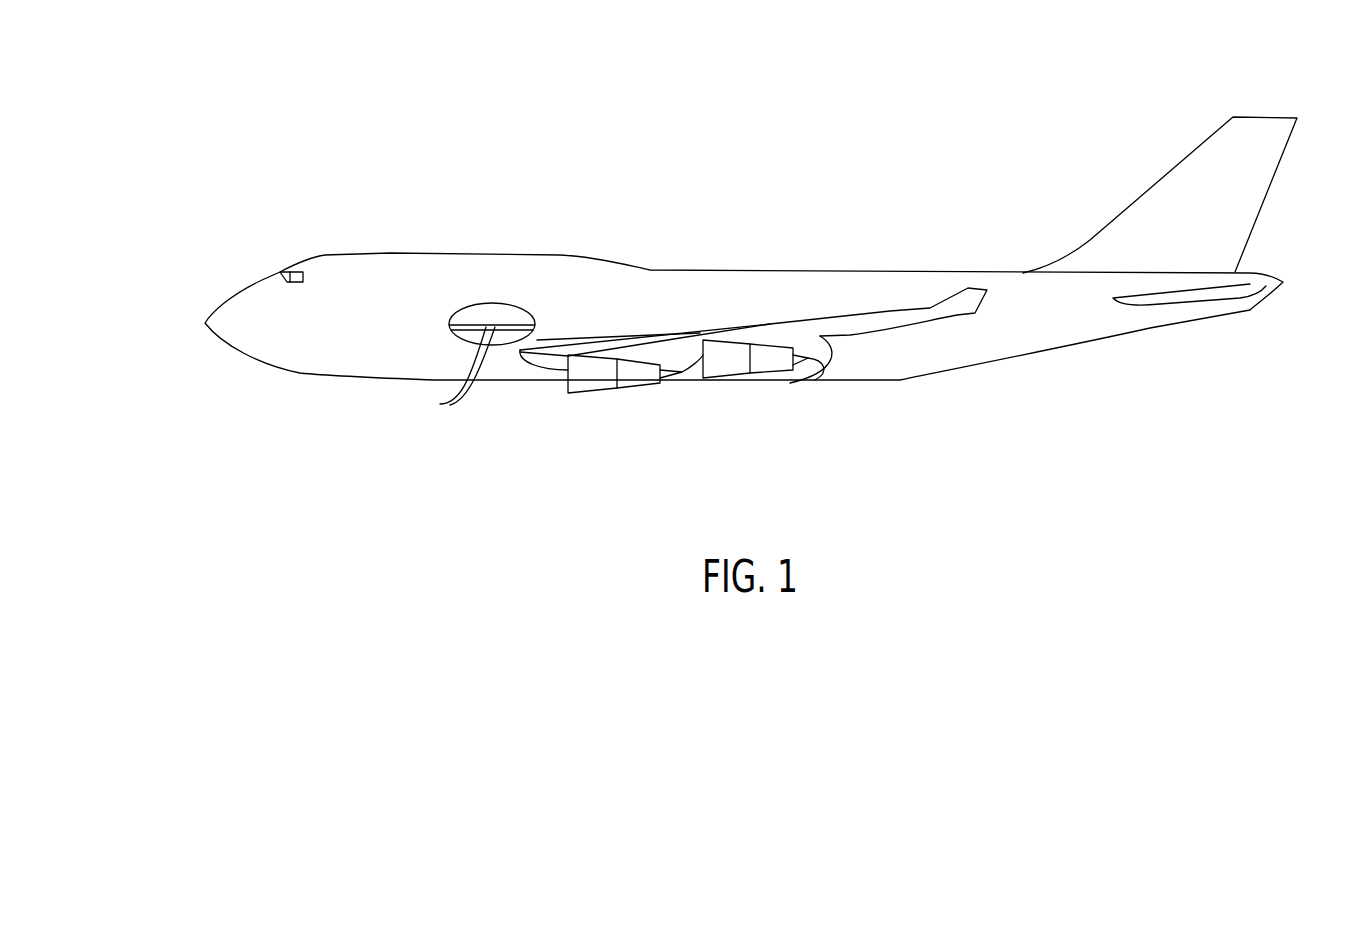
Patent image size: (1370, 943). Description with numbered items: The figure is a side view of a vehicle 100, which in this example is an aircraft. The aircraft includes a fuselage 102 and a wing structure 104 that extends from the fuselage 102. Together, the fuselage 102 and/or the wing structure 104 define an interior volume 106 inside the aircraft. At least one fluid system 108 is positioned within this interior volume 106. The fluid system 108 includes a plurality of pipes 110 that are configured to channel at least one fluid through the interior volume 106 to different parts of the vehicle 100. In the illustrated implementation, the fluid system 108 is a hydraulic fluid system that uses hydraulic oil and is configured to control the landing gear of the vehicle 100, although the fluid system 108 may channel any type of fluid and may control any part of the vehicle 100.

The vehicle 100 is at (988, 94).
The fuselage 102 is at (725, 290).
The wing structure 104 is at (817, 335).
The interior volume 106 is at (520, 318).
The fluid system 108 is at (503, 266).
The pipes 110 is at (440, 405).